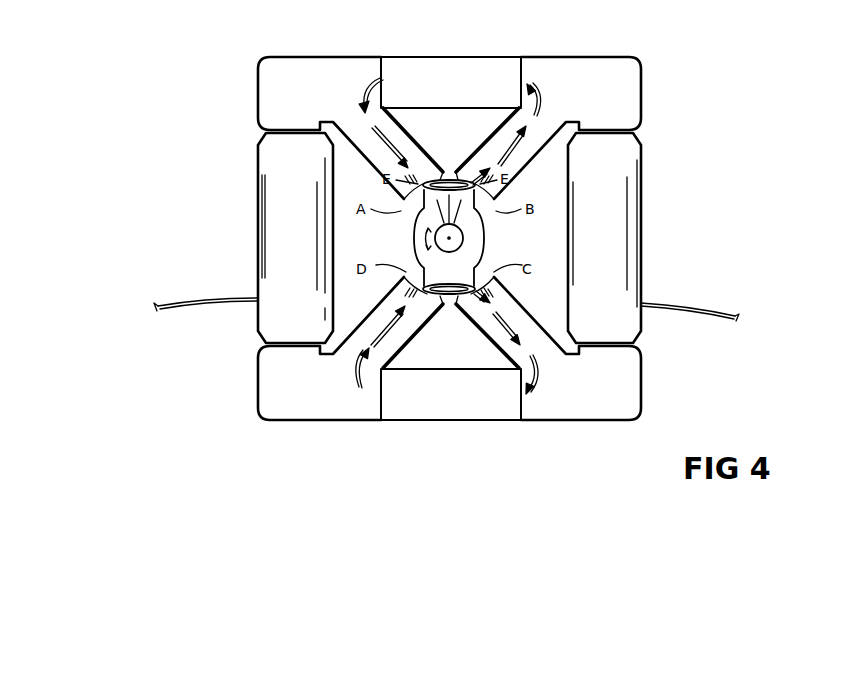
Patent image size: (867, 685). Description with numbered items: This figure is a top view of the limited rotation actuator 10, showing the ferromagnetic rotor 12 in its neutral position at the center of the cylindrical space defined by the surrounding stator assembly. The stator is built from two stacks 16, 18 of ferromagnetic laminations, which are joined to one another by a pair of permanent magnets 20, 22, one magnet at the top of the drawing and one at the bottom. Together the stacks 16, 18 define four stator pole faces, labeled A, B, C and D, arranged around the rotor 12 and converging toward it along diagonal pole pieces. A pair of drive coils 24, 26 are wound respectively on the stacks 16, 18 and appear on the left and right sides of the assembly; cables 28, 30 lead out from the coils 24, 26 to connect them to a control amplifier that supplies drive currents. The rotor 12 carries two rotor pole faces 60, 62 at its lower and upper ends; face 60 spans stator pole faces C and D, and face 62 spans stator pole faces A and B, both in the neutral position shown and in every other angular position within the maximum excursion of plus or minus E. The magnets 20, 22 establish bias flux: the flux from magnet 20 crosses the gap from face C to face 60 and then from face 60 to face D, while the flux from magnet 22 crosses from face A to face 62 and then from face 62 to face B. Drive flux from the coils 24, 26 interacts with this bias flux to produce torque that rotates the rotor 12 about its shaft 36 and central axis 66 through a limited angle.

The limited rotation actuator 10 is at (175, 410).
The ferromagnetic rotor 12 is at (414, 238).
The stack of ferromagnetic laminations 16 is at (298, 411).
The stack of ferromagnetic laminations 18 is at (601, 411).
The permanent magnet 20 is at (446, 412).
The permanent magnet 22 is at (444, 68).
The drive coil 24 is at (272, 212).
The drive coil 26 is at (622, 208).
The cable 28 is at (185, 300).
The cable 30 is at (690, 302).
The rotor shaft 36 is at (463, 233).
The rotor pole face 60 is at (452, 296).
The rotor pole face 62 is at (441, 179).
The rotor axis 66 is at (449, 238).